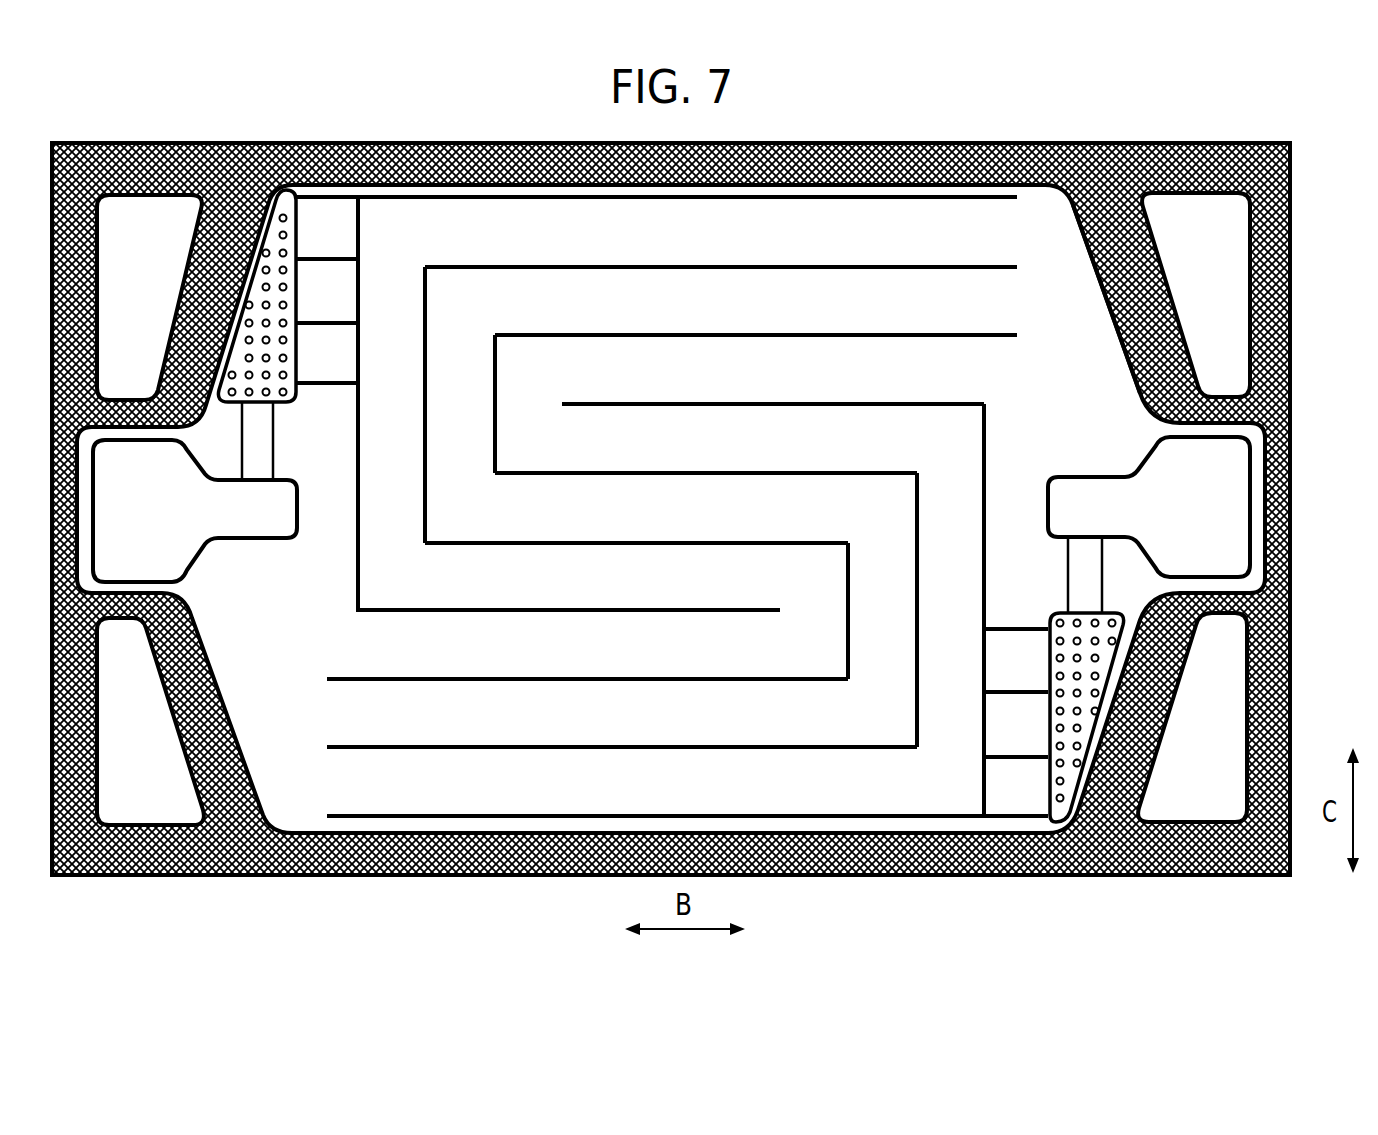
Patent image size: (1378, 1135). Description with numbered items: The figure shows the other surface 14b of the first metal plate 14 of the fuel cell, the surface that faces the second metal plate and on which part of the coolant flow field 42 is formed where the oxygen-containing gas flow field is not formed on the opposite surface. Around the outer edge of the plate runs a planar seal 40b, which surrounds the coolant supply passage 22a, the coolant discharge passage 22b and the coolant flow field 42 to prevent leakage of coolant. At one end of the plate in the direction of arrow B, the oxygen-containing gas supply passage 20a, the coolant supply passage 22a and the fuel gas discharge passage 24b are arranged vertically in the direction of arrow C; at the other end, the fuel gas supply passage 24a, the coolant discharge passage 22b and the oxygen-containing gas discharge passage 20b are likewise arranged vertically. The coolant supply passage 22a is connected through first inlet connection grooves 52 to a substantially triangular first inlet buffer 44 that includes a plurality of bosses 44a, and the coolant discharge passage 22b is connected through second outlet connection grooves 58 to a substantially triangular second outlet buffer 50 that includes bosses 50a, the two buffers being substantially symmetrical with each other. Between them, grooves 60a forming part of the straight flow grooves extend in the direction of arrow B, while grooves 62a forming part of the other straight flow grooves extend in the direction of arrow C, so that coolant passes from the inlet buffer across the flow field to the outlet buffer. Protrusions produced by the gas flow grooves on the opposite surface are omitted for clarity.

The first metal plate 14 is at (322, 97).
The surface of the first metal plate 14b is at (1037, 877).
The coolant flow field 42 is at (988, 184).
The planar seal 40b is at (1118, 326).
The fuel gas supply passage 24a is at (149, 297).
The oxygen-containing gas supply passage 20a is at (1196, 295).
The oxygen-containing gas discharge passage 20b is at (150, 721).
The fuel gas discharge passage 24b is at (1192, 717).
The coolant discharge passage 22b is at (195, 511).
The coolant supply passage 22a is at (1149, 507).
The second outlet buffer 50 is at (298, 234).
The bosses 50a is at (297, 347).
The second outlet connection grooves 58 is at (275, 439).
The grooves 62a is at (359, 573).
The grooves 60a is at (559, 813).
The first inlet buffer 44 is at (1048, 769).
The bosses 44a is at (1049, 645).
The first inlet connection grooves 52 is at (1104, 583).